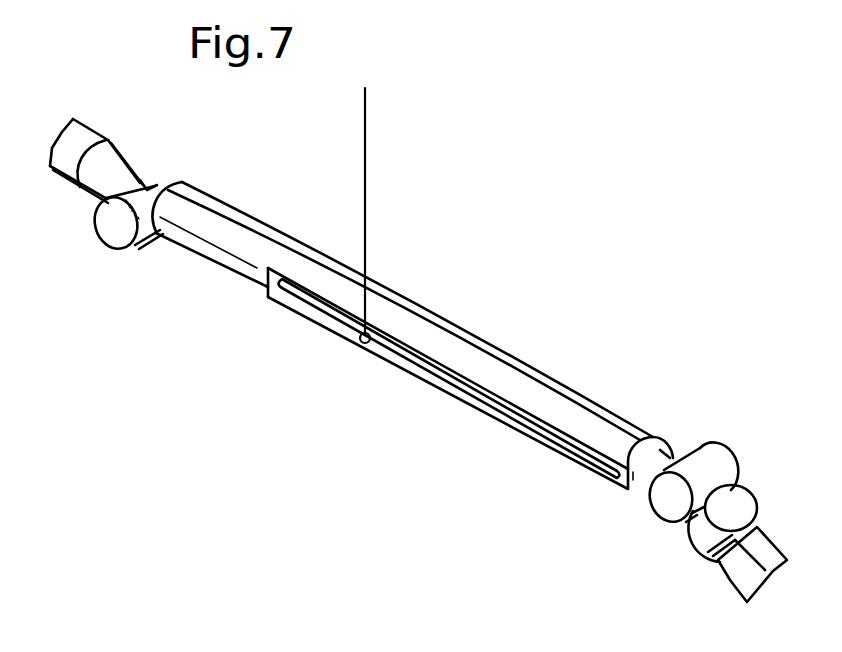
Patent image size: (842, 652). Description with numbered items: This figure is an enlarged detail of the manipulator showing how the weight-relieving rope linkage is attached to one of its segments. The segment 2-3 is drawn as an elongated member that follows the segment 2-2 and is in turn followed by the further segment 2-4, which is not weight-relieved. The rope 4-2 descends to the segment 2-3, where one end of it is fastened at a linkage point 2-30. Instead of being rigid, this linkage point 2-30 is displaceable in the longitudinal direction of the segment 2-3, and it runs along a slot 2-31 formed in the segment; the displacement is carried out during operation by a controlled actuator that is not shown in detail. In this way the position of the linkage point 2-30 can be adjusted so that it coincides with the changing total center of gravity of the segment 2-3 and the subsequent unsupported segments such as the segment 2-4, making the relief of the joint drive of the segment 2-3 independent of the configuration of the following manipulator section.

The segment 2-2 is at (103, 152).
The segment 2-3 is at (466, 352).
The linkage point 2-30 is at (361, 341).
The slot 2-31 is at (458, 394).
The segment 2-4 is at (738, 568).
The rope 4-2 is at (365, 165).